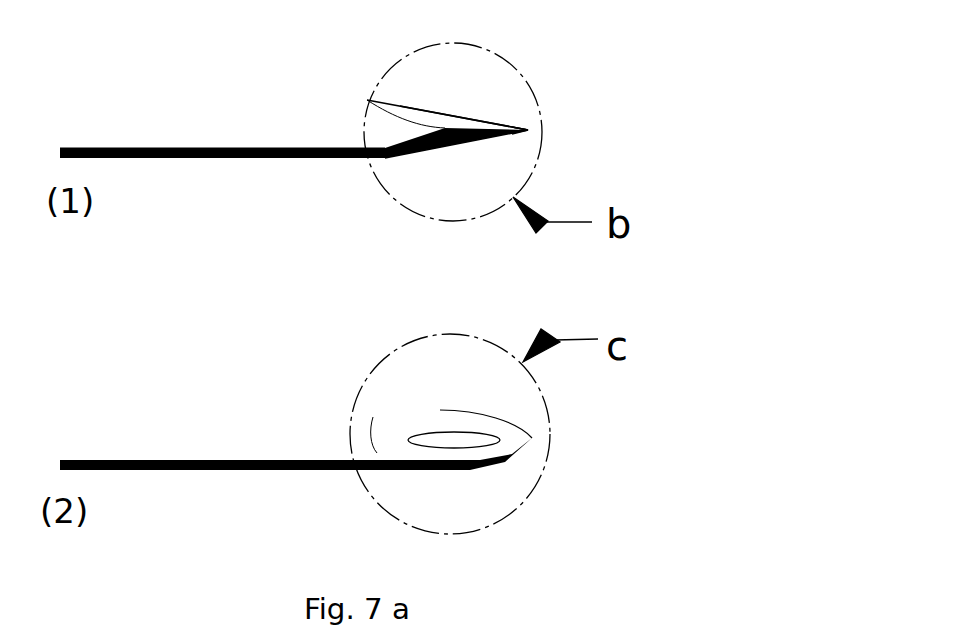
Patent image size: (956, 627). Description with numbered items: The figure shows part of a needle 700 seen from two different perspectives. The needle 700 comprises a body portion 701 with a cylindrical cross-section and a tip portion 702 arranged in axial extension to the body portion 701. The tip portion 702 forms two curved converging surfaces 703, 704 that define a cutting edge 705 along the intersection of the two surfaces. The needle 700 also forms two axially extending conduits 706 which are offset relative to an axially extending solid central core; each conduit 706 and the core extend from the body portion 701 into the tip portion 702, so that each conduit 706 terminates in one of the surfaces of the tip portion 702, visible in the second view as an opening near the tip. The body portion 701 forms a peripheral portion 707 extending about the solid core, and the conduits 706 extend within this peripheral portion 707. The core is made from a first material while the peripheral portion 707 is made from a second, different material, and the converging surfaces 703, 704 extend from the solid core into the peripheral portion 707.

The needle 700 is at (207, 186).
The body portion 701 is at (285, 140).
The tip portion 702 is at (375, 75).
The converging surface 703 is at (442, 112).
The converging surface 704 is at (440, 145).
The cutting edge 705 is at (526, 126).
The conduit 706 is at (460, 437).
The peripheral portion 707 is at (115, 98).